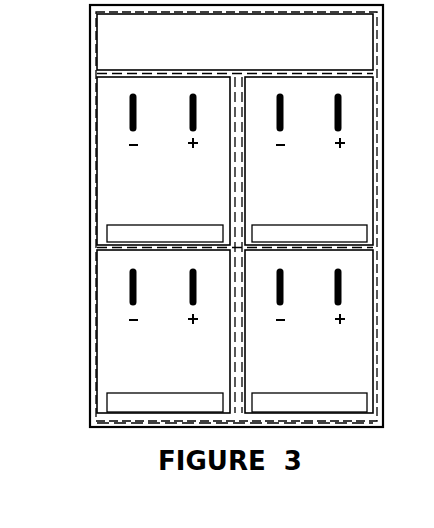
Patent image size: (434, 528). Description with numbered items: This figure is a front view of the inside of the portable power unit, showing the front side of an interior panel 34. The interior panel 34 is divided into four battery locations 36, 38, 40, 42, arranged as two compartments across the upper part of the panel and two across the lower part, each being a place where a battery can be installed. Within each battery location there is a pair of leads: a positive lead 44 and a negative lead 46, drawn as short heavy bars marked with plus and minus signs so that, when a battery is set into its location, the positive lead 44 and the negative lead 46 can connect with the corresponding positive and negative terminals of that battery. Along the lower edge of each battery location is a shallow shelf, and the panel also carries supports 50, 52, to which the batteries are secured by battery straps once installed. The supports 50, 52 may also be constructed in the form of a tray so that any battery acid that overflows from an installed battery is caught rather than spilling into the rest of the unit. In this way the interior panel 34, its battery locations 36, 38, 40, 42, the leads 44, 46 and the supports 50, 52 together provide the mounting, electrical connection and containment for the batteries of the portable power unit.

The interior panel 34 is at (92, 64).
The battery location 36 is at (163, 161).
The battery location 38 is at (309, 161).
The battery location 40 is at (163, 331).
The battery location 42 is at (309, 331).
The positive lead 44 is at (132, 128).
The negative lead 46 is at (192, 128).
The support 50 is at (112, 252).
The support 52 is at (100, 418).